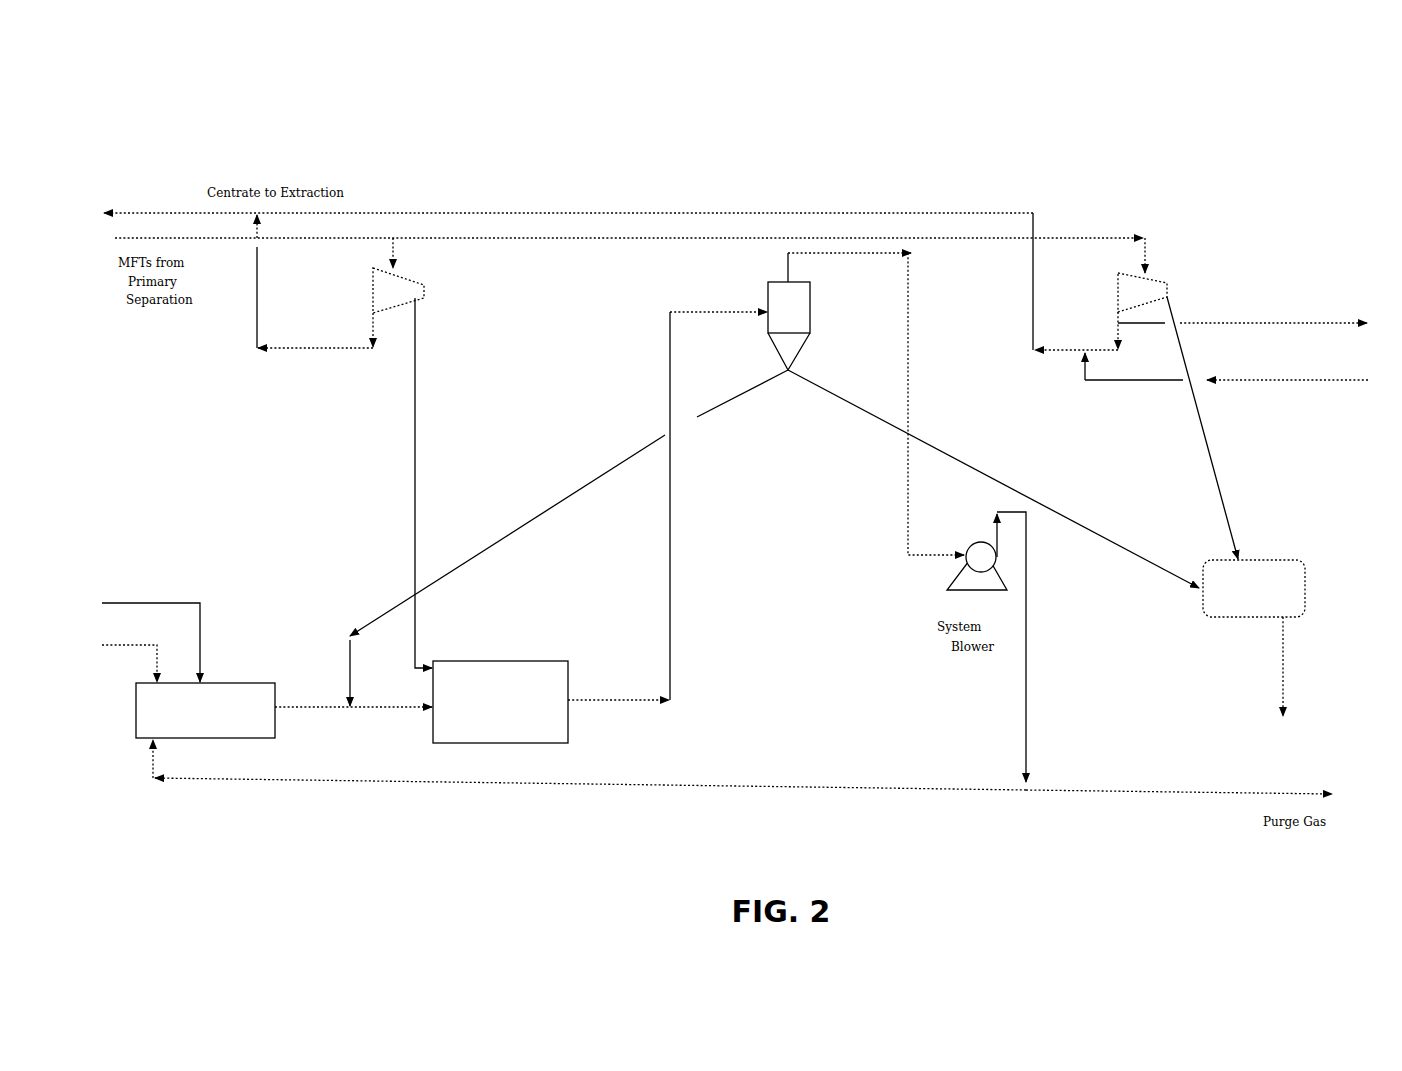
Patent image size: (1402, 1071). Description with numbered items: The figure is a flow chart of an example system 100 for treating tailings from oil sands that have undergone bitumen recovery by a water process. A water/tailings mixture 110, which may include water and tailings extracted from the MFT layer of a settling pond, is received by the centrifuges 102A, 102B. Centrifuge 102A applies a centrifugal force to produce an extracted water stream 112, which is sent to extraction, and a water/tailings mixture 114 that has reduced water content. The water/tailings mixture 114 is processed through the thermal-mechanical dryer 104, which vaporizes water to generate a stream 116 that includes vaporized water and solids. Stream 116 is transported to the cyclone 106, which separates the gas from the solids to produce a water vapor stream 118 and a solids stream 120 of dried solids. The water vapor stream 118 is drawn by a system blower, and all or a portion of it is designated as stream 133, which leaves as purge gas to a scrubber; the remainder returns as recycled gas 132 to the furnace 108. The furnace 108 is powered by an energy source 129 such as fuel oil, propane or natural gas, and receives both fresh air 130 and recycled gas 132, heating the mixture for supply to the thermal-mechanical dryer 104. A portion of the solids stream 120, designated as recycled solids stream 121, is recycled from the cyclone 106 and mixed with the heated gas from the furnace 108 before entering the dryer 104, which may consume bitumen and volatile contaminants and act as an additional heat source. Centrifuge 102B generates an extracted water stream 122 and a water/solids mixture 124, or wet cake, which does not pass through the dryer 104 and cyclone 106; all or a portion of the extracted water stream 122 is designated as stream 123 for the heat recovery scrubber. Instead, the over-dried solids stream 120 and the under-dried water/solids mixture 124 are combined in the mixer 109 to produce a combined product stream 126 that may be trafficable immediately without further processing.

The system 100 is at (1286, 119).
The water/tailings mixture 110 is at (187, 238).
The centrifuge 102A is at (429, 290).
The extracted water stream 112 is at (305, 348).
The water/tailings mixture 114 is at (415, 398).
The thermal-mechanical dryer 104 is at (500, 702).
The furnace 108 is at (205, 710).
The fresh air 130 is at (150, 603).
The energy source 129 is at (103, 645).
The stream 116 is at (670, 592).
The cyclone 106 is at (811, 326).
The water vapor stream 118 is at (908, 350).
The recycled solids stream 121 is at (492, 540).
The solids stream 120 is at (957, 457).
The centrifuge 102B is at (1172, 292).
The extracted water stream 122 is at (1113, 318).
The stream 123 is at (1268, 322).
The water/solids mixture 124 is at (1212, 472).
The mixer 109 is at (1276, 588).
The combined product stream 126 is at (1283, 682).
The recycled gas 132 is at (310, 778).
The stream 133 is at (1118, 791).